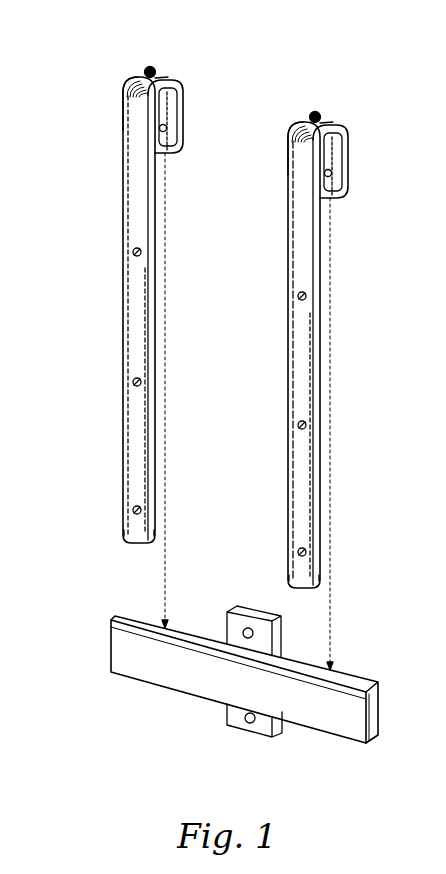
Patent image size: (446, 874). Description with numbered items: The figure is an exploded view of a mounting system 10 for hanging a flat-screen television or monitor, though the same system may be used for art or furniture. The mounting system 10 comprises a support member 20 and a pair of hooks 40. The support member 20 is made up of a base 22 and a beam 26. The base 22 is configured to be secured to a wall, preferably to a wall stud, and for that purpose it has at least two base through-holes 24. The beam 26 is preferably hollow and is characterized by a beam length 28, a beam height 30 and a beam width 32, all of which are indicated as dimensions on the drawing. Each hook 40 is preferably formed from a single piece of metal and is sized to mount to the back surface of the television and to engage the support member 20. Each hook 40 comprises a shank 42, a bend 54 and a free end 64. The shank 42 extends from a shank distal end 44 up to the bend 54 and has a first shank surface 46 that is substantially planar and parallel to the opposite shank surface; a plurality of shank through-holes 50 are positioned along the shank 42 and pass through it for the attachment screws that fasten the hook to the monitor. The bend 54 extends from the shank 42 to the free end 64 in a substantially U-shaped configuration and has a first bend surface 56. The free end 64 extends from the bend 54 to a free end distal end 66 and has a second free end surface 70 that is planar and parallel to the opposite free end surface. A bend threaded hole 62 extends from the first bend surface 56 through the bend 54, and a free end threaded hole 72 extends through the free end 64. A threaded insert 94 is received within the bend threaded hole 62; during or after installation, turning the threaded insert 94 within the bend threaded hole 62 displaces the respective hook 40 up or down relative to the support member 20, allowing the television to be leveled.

The mounting system 10 is at (48, 68).
The support member 20 is at (231, 676).
The base 22 is at (242, 610).
The base through-holes 24 is at (248, 627).
The beam 26 is at (110, 643).
The beam length 28 is at (366, 797).
The beam height 30 is at (366, 692).
The beam width 32 is at (115, 616).
The hook 40 is at (188, 72).
The shank 42 is at (160, 442).
The shank distal end 44 is at (138, 543).
The first shank surface 46 is at (138, 402).
The shank through-holes 50 is at (141, 252).
The bend 54 is at (132, 83).
The first bend surface 56 is at (143, 75).
The bend threaded hole 62 is at (168, 76).
The free end 64 is at (184, 105).
The free end distal end 66 is at (169, 152).
The second free end surface 70 is at (168, 115).
The free end threaded hole 72 is at (165, 131).
The threaded insert 94 is at (150, 66).